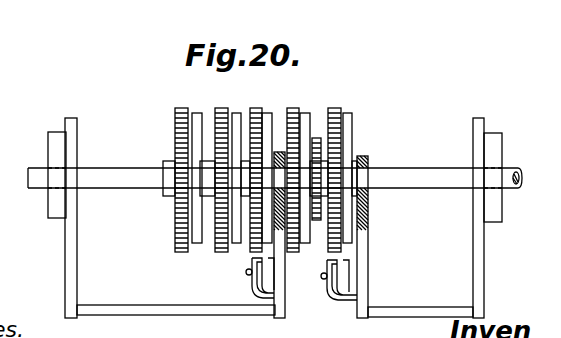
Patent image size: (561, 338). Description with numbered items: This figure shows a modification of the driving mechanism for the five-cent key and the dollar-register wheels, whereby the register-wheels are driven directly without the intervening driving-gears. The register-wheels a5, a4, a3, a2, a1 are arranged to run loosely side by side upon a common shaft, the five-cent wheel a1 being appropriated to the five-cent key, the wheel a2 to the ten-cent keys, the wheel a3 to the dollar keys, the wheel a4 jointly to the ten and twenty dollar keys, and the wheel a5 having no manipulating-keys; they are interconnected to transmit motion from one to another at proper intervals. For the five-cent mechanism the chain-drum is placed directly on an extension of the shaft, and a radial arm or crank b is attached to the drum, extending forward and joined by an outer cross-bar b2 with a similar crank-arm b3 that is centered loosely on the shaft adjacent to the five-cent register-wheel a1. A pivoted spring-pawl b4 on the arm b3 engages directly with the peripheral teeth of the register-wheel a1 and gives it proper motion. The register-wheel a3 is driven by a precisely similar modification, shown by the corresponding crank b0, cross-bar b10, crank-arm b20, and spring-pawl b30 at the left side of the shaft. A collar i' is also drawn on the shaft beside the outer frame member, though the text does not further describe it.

The collar on shaft i' is at (52, 164).
The radial arm b0 is at (77, 253).
The outer cross-bar b10 is at (148, 300).
The crank-arm b20 is at (285, 294).
The pivoted spring-pawl b30 is at (252, 259).
The crank-arm b3 is at (368, 244).
The pivoted spring-pawl b4 is at (328, 262).
The outer cross-bar b2 is at (418, 302).
The radial arm or crank b is at (484, 258).
The register-wheel a5 is at (188, 169).
The register-wheel a4 is at (228, 169).
The register-wheel a3 is at (261, 169).
The register-wheel a2 is at (304, 169).
The register-wheel a1 is at (340, 169).